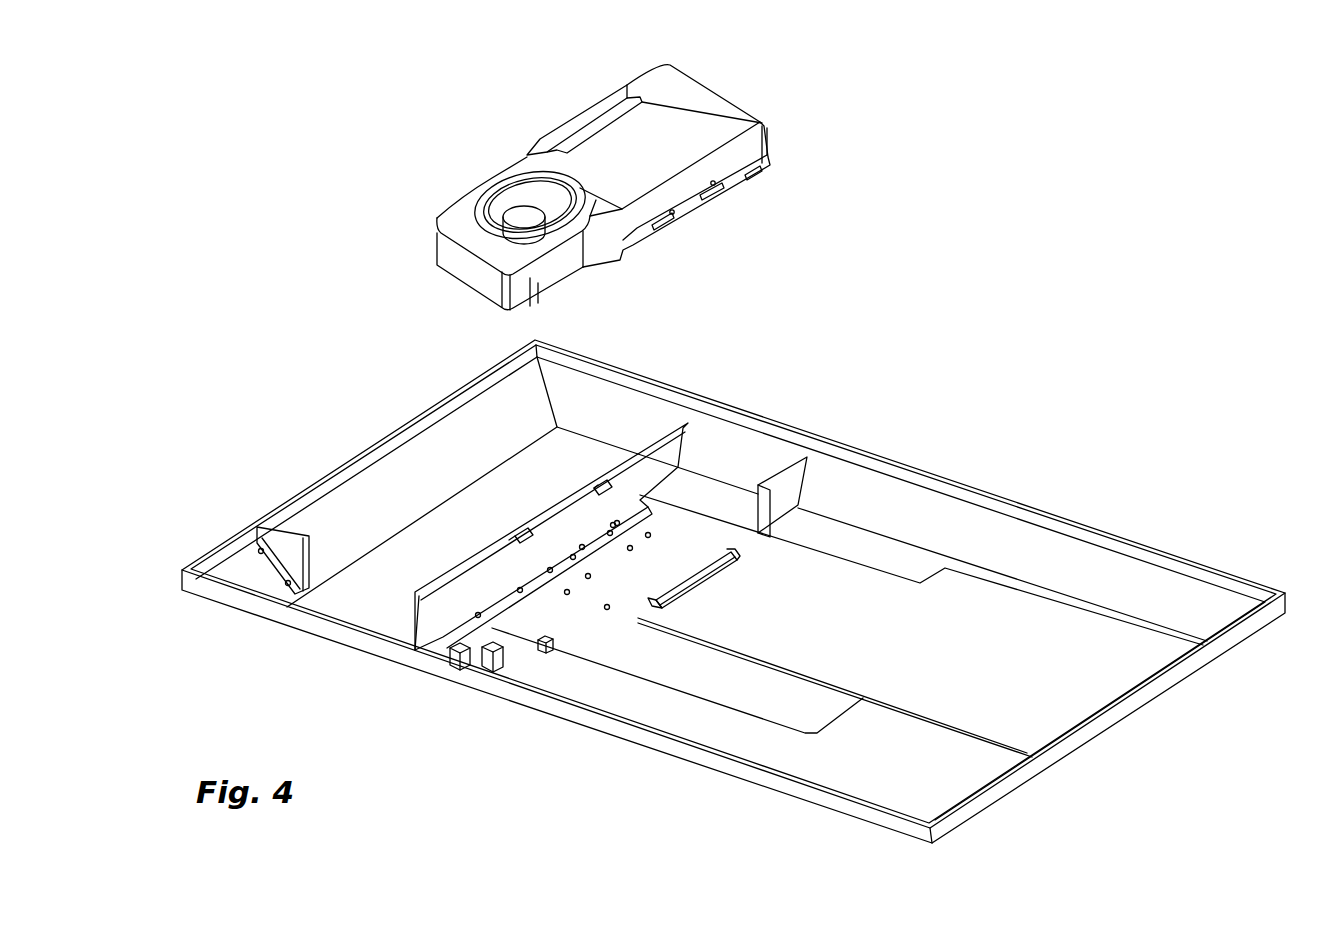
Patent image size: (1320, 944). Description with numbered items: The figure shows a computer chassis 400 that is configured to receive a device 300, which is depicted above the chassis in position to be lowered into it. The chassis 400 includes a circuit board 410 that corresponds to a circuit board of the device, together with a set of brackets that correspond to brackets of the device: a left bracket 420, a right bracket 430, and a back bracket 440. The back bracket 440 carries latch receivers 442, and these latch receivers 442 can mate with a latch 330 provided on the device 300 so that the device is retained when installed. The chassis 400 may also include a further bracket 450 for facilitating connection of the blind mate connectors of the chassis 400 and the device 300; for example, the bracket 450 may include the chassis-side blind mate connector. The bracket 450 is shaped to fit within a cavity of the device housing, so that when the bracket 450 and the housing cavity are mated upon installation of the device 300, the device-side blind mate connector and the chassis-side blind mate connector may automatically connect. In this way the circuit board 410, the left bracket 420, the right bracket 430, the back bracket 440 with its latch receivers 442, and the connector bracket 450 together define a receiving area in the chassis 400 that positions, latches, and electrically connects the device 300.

The device 300 is at (624, 187).
The latch 330 is at (590, 123).
The computer chassis 400 is at (908, 463).
The circuit board 410 is at (1003, 607).
The left bracket 420 is at (487, 658).
The right bracket 430 is at (781, 470).
The back bracket 440 is at (580, 493).
The latch receivers 442 is at (590, 482).
The bracket 450 is at (458, 660).